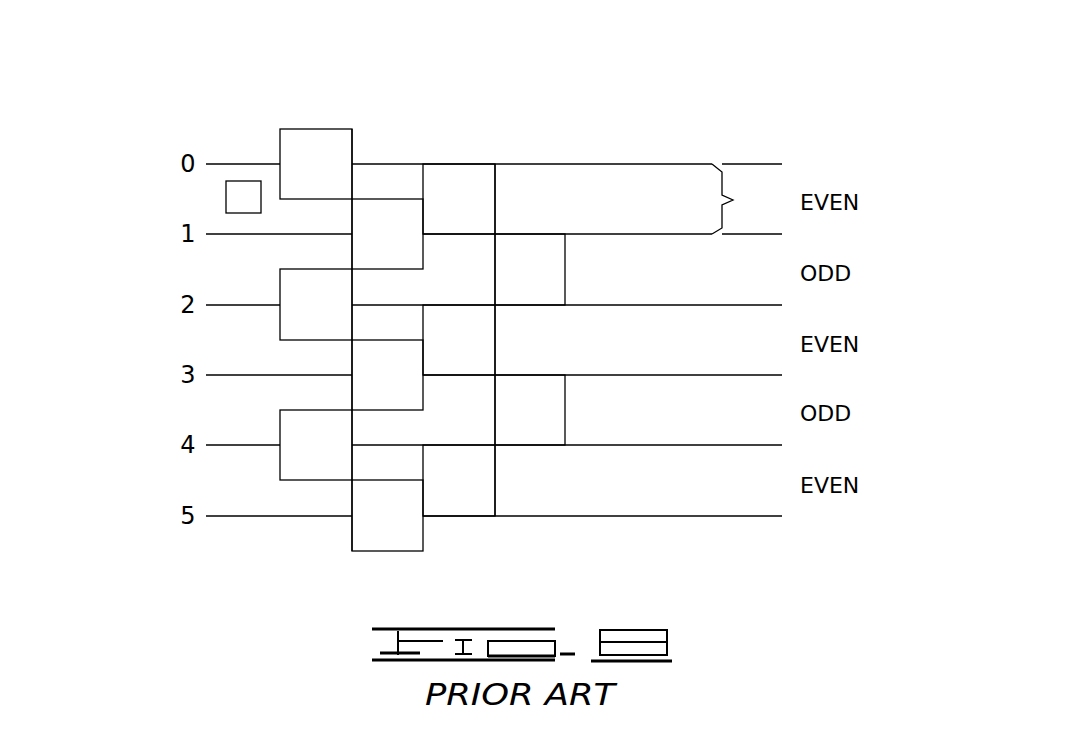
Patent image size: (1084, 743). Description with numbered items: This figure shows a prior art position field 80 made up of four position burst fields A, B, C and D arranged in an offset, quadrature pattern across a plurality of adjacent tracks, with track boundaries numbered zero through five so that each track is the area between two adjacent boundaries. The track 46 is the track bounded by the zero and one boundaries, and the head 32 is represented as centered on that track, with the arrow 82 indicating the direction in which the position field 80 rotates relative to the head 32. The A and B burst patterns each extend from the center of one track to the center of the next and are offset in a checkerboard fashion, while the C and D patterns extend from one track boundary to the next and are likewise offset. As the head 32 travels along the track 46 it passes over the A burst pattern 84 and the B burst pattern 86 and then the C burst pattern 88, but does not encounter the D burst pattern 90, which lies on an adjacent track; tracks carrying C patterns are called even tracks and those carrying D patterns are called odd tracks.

The head 32 is at (228, 202).
The track 46 is at (750, 196).
The position field 80 is at (460, 140).
The arrow 82 is at (623, 139).
The A burst pattern 84 is at (300, 138).
The B burst pattern 86 is at (410, 213).
The C burst pattern 88 is at (480, 177).
The D burst pattern 90 is at (541, 296).